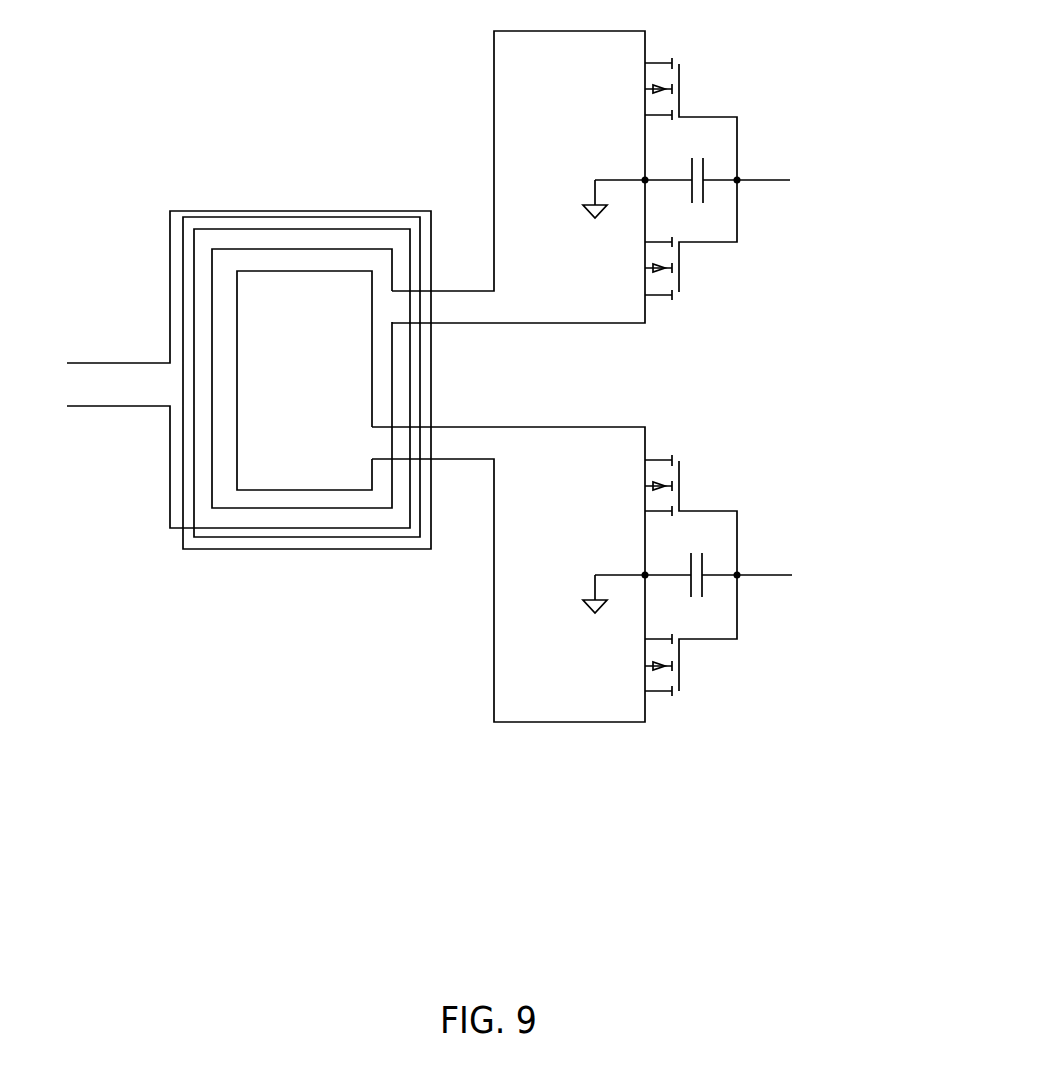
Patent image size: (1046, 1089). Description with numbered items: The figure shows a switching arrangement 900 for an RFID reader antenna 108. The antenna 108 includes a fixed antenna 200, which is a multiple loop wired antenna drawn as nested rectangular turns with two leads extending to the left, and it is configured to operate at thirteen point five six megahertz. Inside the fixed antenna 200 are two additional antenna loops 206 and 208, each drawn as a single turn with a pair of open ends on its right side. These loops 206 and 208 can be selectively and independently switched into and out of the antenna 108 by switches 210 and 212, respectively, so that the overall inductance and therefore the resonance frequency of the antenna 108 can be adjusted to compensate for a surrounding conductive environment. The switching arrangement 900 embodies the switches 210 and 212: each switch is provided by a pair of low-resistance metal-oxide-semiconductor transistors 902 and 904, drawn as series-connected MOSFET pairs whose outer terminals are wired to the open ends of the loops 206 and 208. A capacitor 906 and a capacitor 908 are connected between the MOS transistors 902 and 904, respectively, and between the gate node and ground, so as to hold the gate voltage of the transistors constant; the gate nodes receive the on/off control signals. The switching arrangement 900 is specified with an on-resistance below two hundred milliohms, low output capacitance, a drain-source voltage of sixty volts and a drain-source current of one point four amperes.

The antenna 108 is at (340, 579).
The fixed antenna 200 is at (249, 381).
The additional antenna loop 206 is at (292, 272).
The additional antenna loop 208 is at (255, 250).
The switch 210 is at (638, 574).
The switch 212 is at (648, 177).
The MOS transistor 902 is at (681, 475).
The MOS transistor 904 is at (683, 72).
The capacitor 906 is at (703, 193).
The capacitor 908 is at (702, 585).
The switching arrangement 900 is at (593, 851).